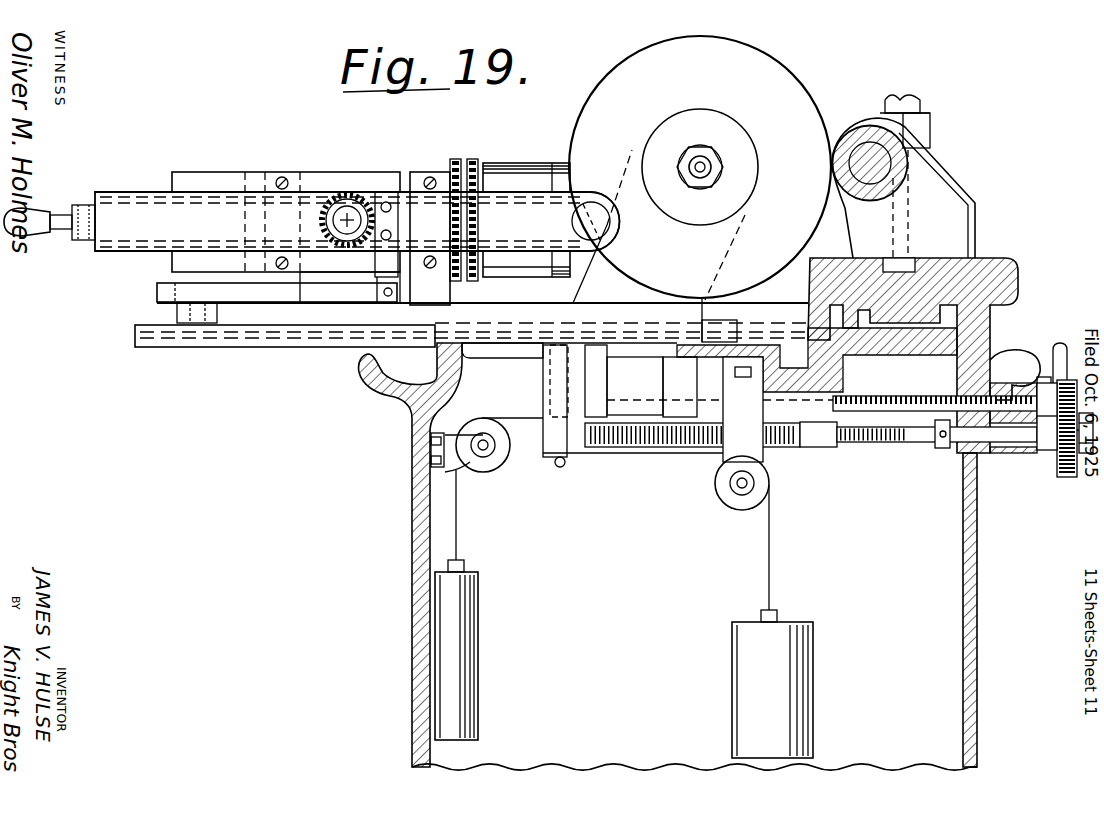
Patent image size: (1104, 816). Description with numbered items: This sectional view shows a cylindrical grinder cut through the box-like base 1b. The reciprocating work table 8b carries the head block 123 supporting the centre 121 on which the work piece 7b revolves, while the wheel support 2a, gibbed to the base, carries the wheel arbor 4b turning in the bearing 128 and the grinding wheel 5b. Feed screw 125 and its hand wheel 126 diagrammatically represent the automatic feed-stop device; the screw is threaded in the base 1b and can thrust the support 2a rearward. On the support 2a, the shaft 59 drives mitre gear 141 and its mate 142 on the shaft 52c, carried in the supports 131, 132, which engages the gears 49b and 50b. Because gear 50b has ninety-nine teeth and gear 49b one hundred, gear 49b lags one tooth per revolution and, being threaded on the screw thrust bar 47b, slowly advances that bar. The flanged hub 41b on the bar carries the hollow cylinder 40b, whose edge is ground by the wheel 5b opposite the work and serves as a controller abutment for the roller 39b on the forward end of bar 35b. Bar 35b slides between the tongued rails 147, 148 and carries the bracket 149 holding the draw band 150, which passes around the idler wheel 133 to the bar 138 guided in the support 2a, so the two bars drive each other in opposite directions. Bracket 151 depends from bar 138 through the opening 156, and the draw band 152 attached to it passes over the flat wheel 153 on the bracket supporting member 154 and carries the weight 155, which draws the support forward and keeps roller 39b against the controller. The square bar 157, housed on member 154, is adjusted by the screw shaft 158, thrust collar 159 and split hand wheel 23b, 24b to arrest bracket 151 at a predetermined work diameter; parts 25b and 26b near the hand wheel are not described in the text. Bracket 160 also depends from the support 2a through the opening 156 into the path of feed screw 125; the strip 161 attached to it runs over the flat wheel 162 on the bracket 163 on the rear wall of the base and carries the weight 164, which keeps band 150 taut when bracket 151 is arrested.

The base 1b is at (412, 538).
The wheel support 2a is at (552, 310).
The wheel arbor 4b is at (700, 156).
The wheel 5b is at (792, 90).
The work piece 7b is at (872, 200).
The work table 8b is at (998, 258).
The split hand wheel 23b is at (1058, 478).
The split hand wheel 24b is at (1062, 478).
The pawl 25b is at (1042, 352).
The knob 26b is at (1088, 455).
The bar 35b is at (615, 232).
The roller 39b is at (598, 202).
The hollow cylinder 40b is at (540, 156).
The flanged hub 41b is at (488, 172).
The screw thrust bar 47b is at (84, 205).
The gear 49b is at (474, 283).
The gear 50b is at (456, 283).
The shaft 52c is at (357, 221).
The shaft 59 is at (342, 200).
The centre 121 is at (905, 182).
The head block 123 is at (948, 172).
The feed screw 125 is at (925, 380).
The hand wheel 126 is at (1062, 343).
The bearing 128 is at (740, 218).
The support 131 is at (303, 182).
The support 132 is at (414, 180).
The band wheel 133 is at (157, 287).
The bar 138 is at (275, 348).
The mitre gear 141 is at (342, 238).
The mitre gear 142 is at (378, 200).
The tongued rail 147 is at (206, 172).
The tongued rail 148 is at (172, 266).
The bracket 149 is at (400, 280).
The draw band 150 is at (180, 306).
The bracket 151 is at (554, 460).
The draw band 152 is at (656, 450).
The flat wheel 153 is at (722, 504).
The bracket supporting member 154 is at (763, 470).
The weight 155 is at (772, 621).
The opening 156 is at (516, 352).
The square bar 157 is at (822, 447).
The screw shaft 158 is at (890, 443).
The thrust collar 159 is at (943, 450).
The bracket 160 is at (600, 375).
The flexible metal strip 161 is at (515, 418).
The flat wheel 162 is at (478, 474).
The bracket 163 is at (431, 456).
The weight 164 is at (470, 680).